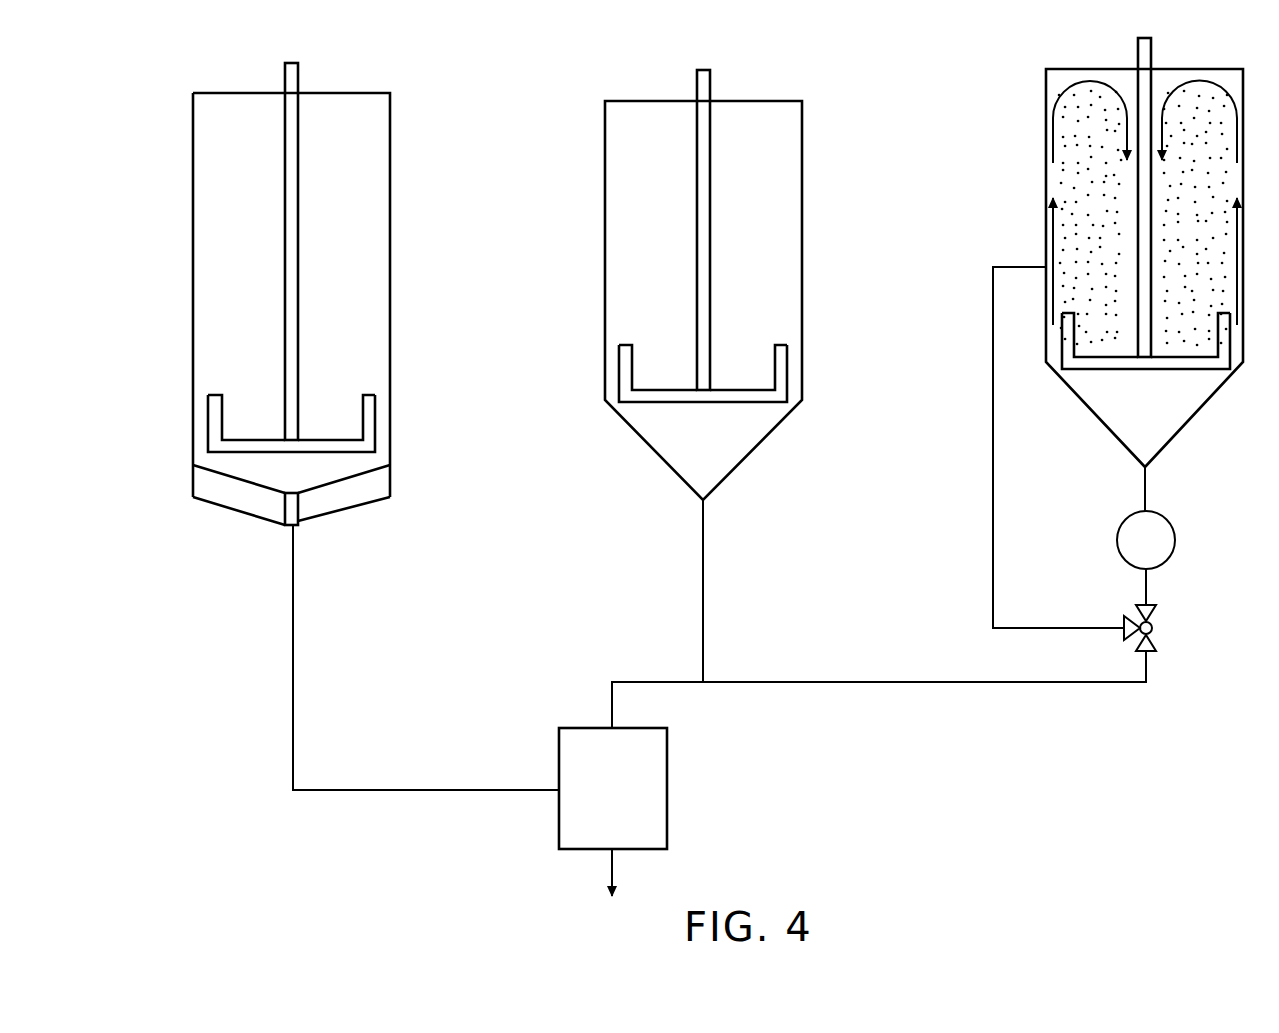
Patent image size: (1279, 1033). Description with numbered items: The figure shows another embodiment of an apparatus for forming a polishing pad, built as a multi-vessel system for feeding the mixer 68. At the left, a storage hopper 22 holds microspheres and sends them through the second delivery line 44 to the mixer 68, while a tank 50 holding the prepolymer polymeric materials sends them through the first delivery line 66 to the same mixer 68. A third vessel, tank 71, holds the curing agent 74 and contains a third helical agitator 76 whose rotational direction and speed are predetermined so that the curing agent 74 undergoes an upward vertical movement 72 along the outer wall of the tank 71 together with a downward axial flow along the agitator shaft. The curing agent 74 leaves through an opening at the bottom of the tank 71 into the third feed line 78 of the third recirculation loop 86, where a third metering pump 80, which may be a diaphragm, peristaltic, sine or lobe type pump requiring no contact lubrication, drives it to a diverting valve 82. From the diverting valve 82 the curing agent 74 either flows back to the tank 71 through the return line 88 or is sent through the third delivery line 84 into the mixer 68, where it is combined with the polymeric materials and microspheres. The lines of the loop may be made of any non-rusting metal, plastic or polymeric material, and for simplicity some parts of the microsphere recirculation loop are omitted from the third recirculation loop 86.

The storage hopper 22 is at (390, 156).
The tank 50 is at (802, 197).
The second delivery line 44 is at (430, 790).
The first delivery line 66 is at (641, 681).
The mixer 68 is at (667, 773).
The third delivery line 84 is at (913, 681).
The third recirculation loop 86 is at (968, 413).
The tank 71 is at (1046, 92).
The upward vertical movement 72 is at (1197, 82).
The curing agent 74 is at (1071, 175).
The third helical agitator 76 is at (1152, 344).
The third feed line 78 is at (1146, 489).
The third metering pump 80 is at (1117, 540).
The diverting valve 82 is at (1157, 631).
The return line 88 is at (1013, 266).